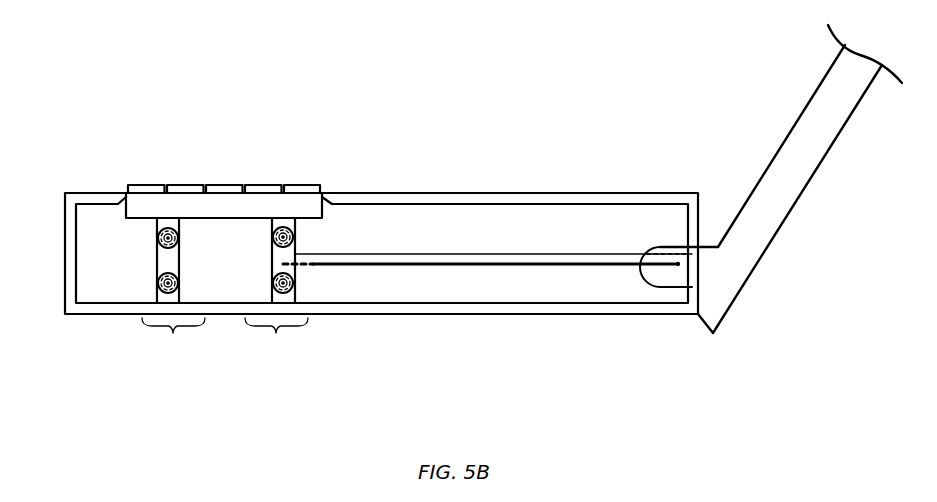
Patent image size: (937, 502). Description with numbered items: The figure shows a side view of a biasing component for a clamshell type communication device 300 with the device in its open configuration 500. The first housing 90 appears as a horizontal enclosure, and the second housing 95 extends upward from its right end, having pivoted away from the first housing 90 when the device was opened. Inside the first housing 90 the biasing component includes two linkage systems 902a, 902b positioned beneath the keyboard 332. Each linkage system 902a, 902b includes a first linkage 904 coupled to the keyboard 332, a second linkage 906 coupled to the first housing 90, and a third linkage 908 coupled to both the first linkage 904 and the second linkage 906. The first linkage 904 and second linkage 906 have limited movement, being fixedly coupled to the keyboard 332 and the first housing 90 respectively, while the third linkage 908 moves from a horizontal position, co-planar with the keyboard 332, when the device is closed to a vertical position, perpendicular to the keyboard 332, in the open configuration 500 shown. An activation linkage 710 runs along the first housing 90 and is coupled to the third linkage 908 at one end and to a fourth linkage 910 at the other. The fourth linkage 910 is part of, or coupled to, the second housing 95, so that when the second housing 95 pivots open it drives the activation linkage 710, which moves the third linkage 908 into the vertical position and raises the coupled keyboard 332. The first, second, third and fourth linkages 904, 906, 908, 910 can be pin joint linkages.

The open configuration 500 is at (163, 144).
The communication device 300 is at (486, 142).
The keyboard 332 is at (147, 205).
The first housing 90 is at (607, 313).
The second housing 95 is at (773, 157).
The fourth linkage 910 is at (680, 253).
The activation linkage 710 is at (473, 258).
The first linkage 904 is at (158, 222).
The third linkage 908 is at (160, 258).
The second linkage 906 is at (160, 285).
The linkage system 902a is at (277, 334).
The linkage system 902b is at (173, 334).